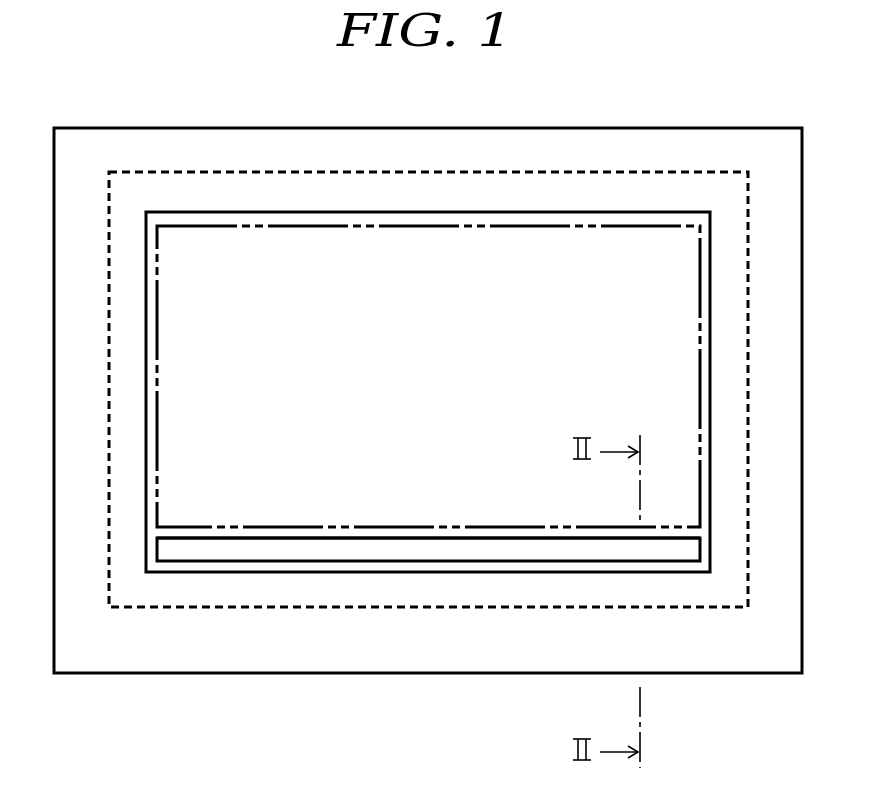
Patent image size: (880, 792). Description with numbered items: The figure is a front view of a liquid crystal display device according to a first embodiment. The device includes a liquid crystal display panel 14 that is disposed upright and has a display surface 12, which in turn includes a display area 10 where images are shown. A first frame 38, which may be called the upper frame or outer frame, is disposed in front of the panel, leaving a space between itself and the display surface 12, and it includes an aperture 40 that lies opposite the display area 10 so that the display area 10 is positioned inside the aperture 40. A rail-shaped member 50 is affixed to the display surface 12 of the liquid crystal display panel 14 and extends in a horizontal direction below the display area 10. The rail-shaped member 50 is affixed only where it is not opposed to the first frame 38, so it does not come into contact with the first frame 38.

The display area 10 is at (195, 527).
The display surface 12 is at (443, 391).
The liquid crystal display panel 14 is at (353, 607).
The first frame 38 is at (408, 673).
The aperture 40 is at (225, 566).
The rail-shaped member 50 is at (488, 550).